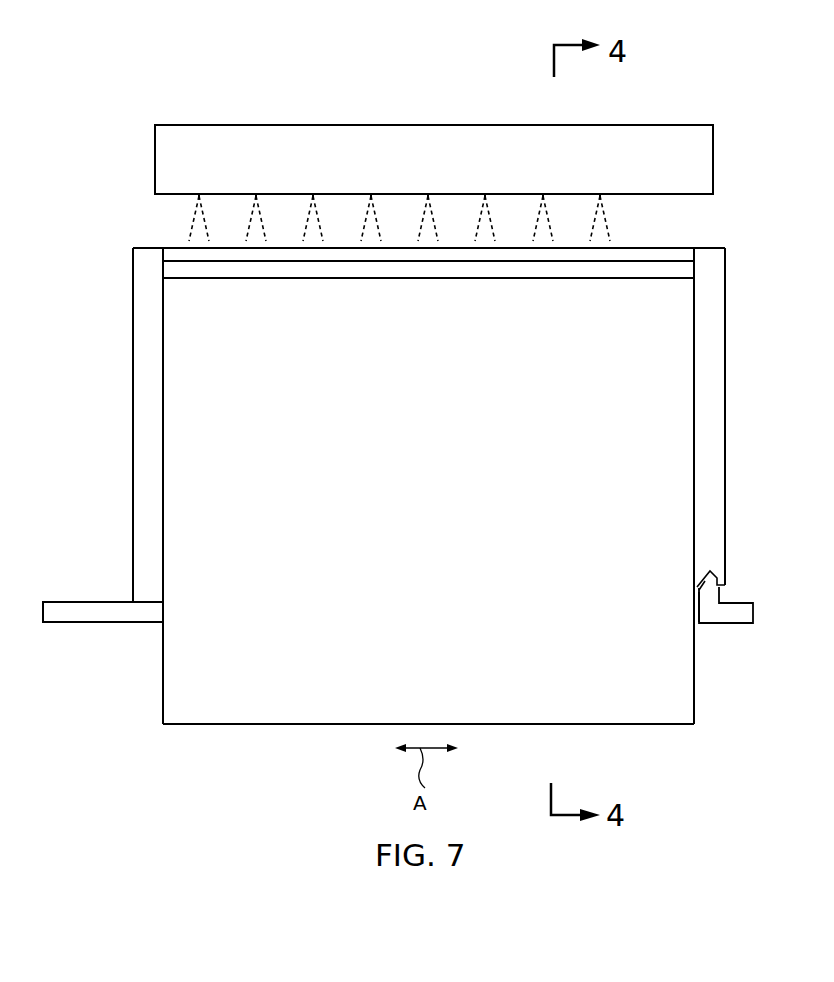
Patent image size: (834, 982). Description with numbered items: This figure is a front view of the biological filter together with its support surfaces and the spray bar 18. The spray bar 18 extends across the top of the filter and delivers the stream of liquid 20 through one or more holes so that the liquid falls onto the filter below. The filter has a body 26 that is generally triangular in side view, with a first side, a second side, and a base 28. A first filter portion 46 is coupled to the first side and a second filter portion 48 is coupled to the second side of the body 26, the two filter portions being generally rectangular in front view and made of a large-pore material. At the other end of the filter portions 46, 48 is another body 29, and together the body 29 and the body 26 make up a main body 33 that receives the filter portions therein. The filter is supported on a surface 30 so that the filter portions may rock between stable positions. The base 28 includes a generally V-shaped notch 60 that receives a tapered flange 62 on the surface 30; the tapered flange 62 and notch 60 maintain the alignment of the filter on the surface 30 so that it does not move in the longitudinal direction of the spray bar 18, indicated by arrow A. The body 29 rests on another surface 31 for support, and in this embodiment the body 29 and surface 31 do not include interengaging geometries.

The spray bar 18 is at (370, 131).
The stream of liquid 20 is at (496, 218).
The main body 33 is at (652, 212).
The first filter portion 46 is at (670, 258).
The body 29 is at (133, 440).
The surface 31 is at (64, 617).
The second filter portion 48 is at (578, 722).
The body 26 is at (722, 383).
The tapered flange 62 is at (714, 572).
The surface 30 is at (753, 612).
The V-shaped notch 60 is at (700, 590).
The base 28 is at (694, 566).